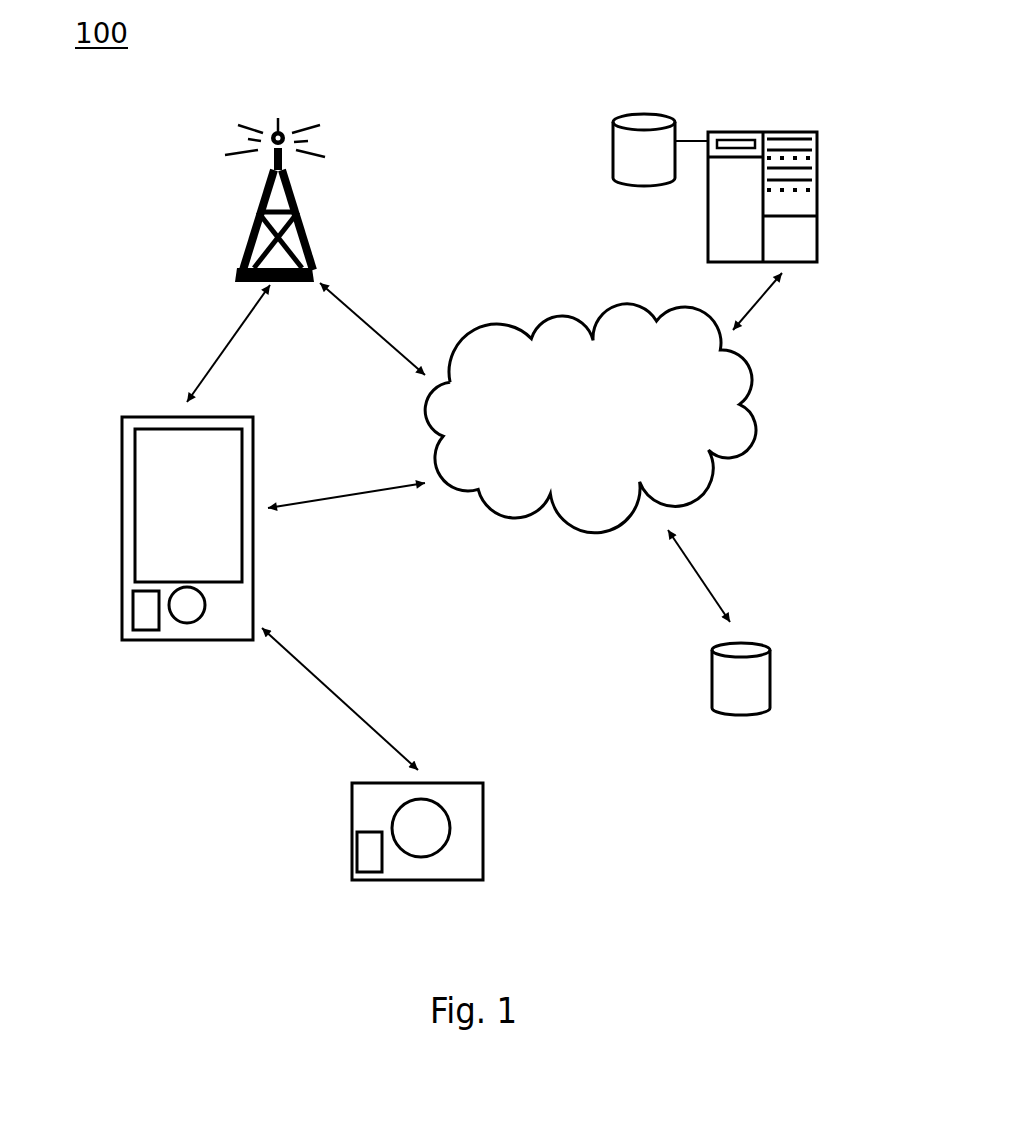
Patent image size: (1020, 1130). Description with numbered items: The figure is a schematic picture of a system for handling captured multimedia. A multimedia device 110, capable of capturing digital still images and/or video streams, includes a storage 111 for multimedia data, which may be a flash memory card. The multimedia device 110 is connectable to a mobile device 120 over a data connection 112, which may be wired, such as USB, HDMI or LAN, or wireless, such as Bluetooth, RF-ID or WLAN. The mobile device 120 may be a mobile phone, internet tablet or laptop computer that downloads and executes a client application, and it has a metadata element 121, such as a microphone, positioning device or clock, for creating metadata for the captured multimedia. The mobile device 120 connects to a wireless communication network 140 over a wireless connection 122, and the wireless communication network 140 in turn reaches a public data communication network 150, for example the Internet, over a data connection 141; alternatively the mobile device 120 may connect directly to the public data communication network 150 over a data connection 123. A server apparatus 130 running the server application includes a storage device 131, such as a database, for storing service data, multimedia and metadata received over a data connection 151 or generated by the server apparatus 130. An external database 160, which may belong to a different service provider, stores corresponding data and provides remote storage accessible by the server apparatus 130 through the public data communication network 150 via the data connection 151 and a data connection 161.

The multimedia device 110 is at (483, 840).
The storage 111 is at (370, 850).
The data connection 112 is at (335, 695).
The mobile device 120 is at (255, 570).
The metadata element 121 is at (148, 611).
The wireless connection 122 is at (228, 343).
The data connection 123 is at (333, 498).
The server apparatus 130 is at (708, 232).
The storage device 131 is at (612, 148).
The wireless communication network 140 is at (267, 192).
The data connection 141 is at (373, 327).
The public data communication network 150 is at (737, 457).
The data connection 151 is at (760, 303).
The external database 160 is at (738, 712).
The data connection 161 is at (698, 575).